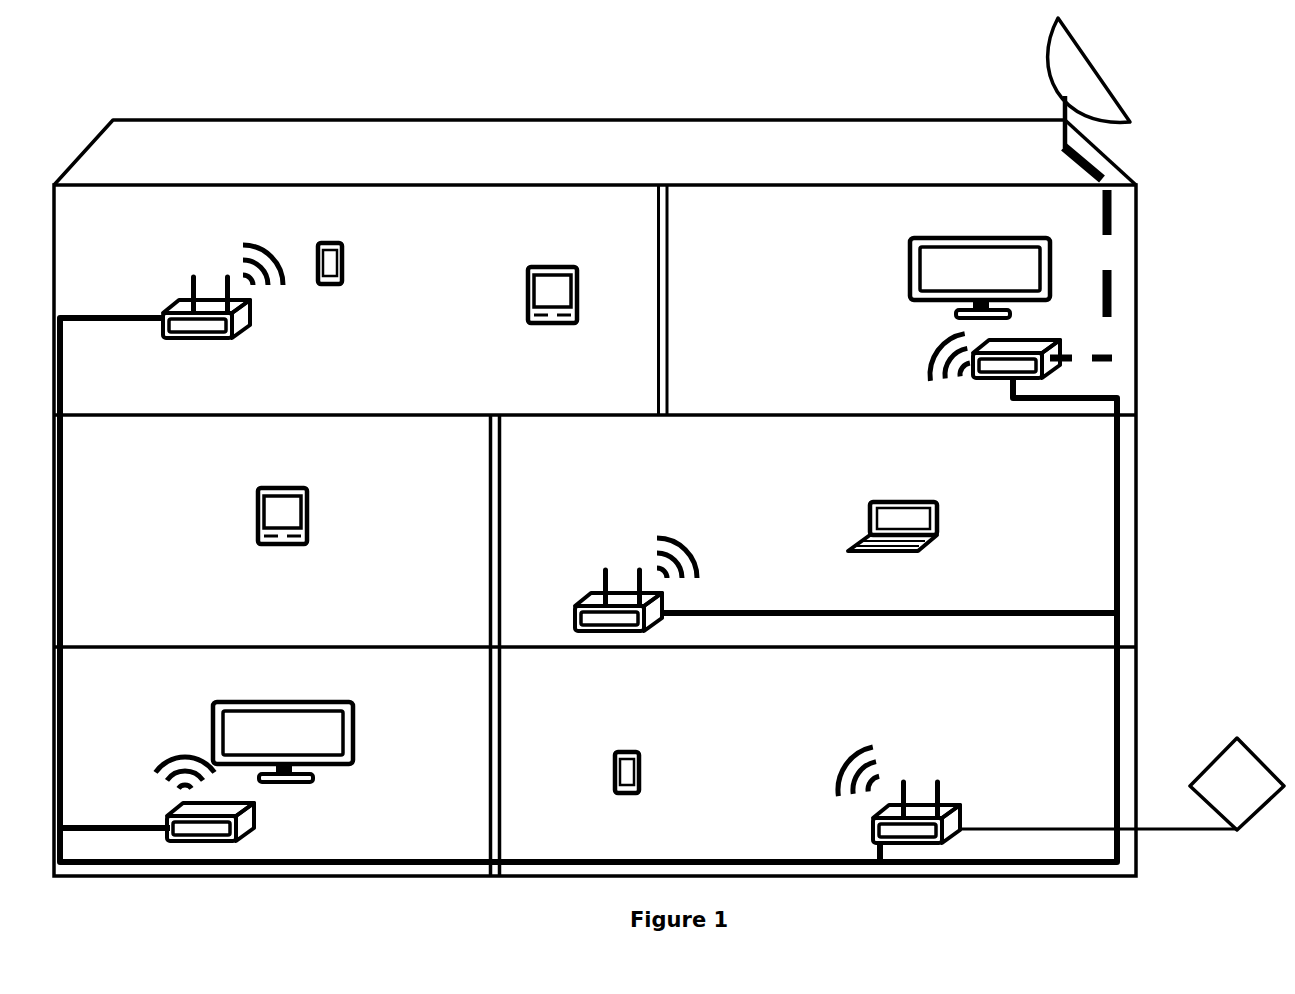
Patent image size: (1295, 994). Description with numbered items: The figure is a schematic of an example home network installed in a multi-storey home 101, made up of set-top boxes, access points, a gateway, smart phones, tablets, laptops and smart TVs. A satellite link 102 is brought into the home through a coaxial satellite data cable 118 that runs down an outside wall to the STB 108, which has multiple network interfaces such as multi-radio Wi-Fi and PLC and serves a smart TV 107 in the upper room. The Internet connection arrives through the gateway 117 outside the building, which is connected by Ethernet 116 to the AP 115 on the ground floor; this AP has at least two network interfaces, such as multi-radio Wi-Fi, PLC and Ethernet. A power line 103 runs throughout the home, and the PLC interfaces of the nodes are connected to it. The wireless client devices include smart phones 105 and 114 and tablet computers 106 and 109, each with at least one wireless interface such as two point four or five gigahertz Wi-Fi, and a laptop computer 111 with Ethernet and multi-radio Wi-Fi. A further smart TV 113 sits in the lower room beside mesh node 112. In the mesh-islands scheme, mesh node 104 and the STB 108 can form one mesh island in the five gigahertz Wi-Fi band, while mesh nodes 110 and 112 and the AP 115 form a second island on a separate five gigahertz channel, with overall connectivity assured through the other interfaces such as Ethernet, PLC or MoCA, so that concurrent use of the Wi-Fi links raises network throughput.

The building 101 is at (595, 482).
The satellite link 102 is at (1093, 82).
The power line 103 is at (588, 572).
The mesh node 104 is at (223, 289).
The smart phone 105 is at (329, 249).
The tablet computer 106 is at (552, 280).
The smart TV 107 is at (961, 267).
The STB (set-top box) 108 is at (996, 349).
The tablet computer 109 is at (282, 502).
The mesh node 110 is at (636, 584).
The laptop computer 111 is at (892, 511).
The mesh node 112 is at (195, 799).
The television 113 is at (283, 728).
The smart phone 114 is at (625, 758).
The AP (access point) 115 is at (899, 795).
The Ethernet 116 is at (1098, 814).
The gateway (GW) 117 is at (1233, 779).
The coaxial satellite data cable 118 is at (1081, 252).